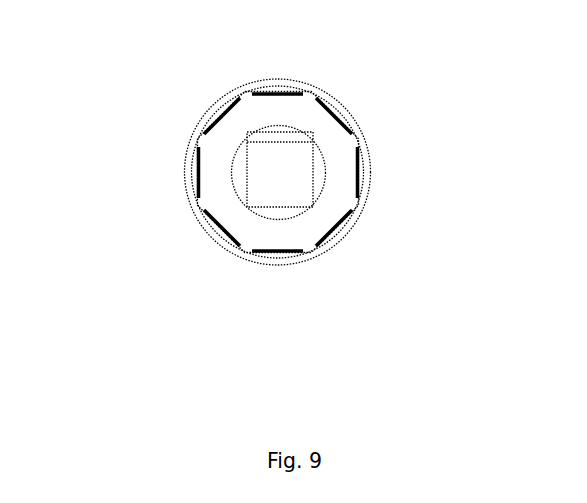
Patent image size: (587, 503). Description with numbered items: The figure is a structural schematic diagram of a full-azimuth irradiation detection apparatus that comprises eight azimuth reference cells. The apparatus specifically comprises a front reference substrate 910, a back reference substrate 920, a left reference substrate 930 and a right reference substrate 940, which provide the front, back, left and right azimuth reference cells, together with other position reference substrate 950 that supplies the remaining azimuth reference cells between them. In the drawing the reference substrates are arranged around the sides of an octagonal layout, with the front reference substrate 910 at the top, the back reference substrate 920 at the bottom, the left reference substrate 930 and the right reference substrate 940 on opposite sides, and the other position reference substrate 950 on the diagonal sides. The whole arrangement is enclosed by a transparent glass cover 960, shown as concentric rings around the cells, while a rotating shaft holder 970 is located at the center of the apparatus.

The front reference substrate 910 is at (282, 88).
The back reference substrate 920 is at (278, 253).
The left reference substrate 930 is at (197, 181).
The right reference substrate 940 is at (373, 195).
The other position reference substrate 950 is at (351, 122).
The transparent glass cover 960 is at (214, 117).
The rotating shaft holder 970 is at (247, 207).